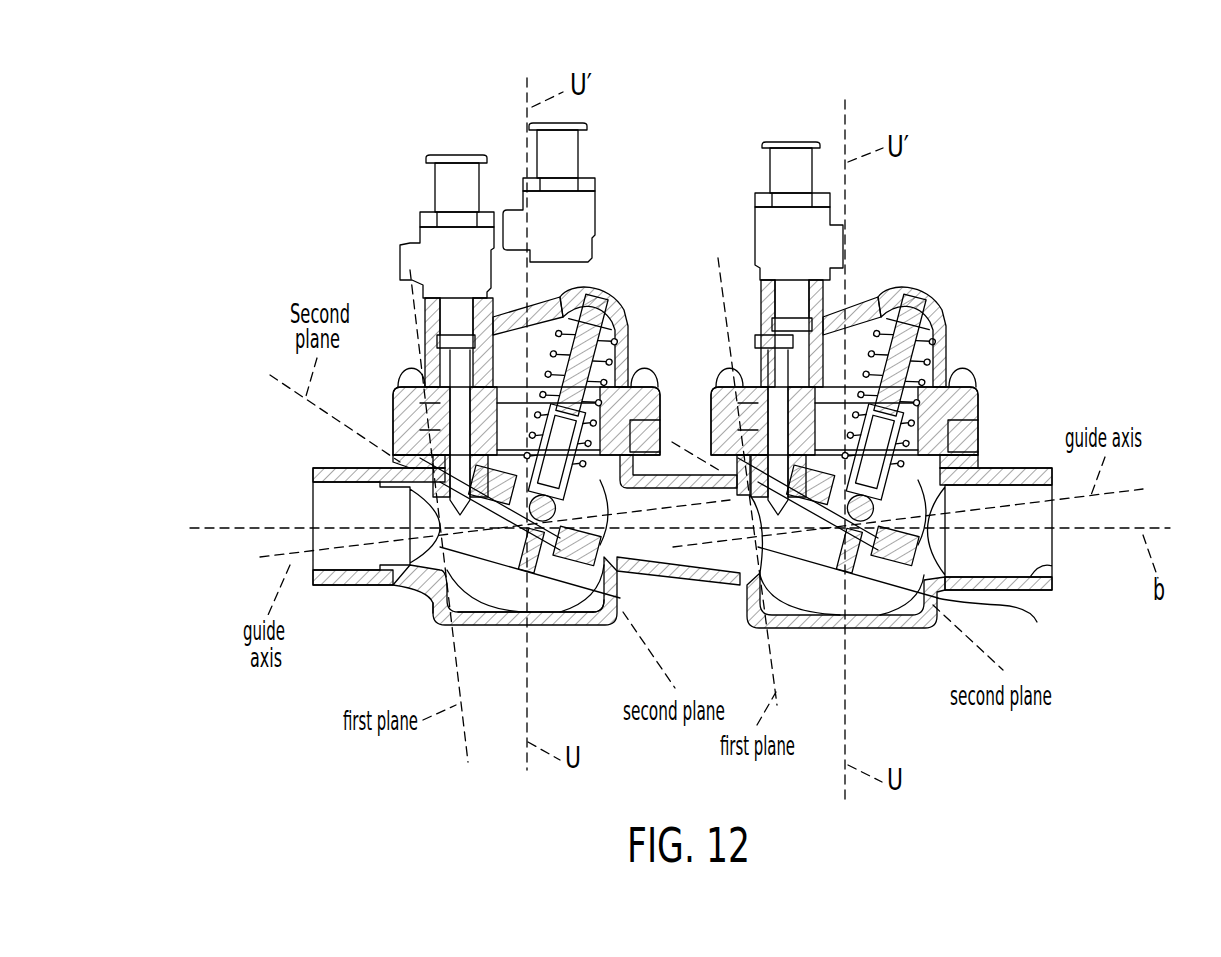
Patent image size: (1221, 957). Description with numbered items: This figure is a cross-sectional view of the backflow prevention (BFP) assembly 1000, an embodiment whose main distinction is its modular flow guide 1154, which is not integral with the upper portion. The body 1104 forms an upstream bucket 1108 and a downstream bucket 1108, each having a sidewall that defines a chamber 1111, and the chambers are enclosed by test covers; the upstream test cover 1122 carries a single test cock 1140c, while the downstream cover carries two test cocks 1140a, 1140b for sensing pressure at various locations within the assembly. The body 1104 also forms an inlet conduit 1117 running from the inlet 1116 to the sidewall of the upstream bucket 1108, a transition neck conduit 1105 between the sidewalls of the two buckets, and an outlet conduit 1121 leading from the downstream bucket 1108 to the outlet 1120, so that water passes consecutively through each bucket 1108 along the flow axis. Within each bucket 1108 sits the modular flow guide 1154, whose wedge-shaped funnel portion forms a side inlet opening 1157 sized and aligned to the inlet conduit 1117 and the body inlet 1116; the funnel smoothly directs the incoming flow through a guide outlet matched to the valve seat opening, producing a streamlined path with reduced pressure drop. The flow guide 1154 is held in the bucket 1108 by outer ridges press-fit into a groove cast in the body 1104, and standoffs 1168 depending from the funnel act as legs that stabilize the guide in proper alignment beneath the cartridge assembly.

The backflow prevention (BFP) assembly 1000 is at (205, 140).
The body 1104 is at (588, 620).
The transition neck conduit 1105 is at (670, 472).
The bucket 1108 is at (905, 620).
The chamber 1111 is at (857, 598).
The inlet 1116 is at (340, 488).
The inlet conduit 1117 is at (428, 580).
The outlet 1120 is at (1030, 566).
The outlet conduit 1121 is at (994, 628).
The upstream test cover 1122 is at (948, 330).
The test cock 1140a is at (455, 176).
The test cock 1140b is at (575, 158).
The test cock 1140c is at (787, 154).
The modular flow guide 1154 is at (500, 578).
The side inlet opening 1157 is at (440, 560).
The standoffs 1168 is at (540, 600).